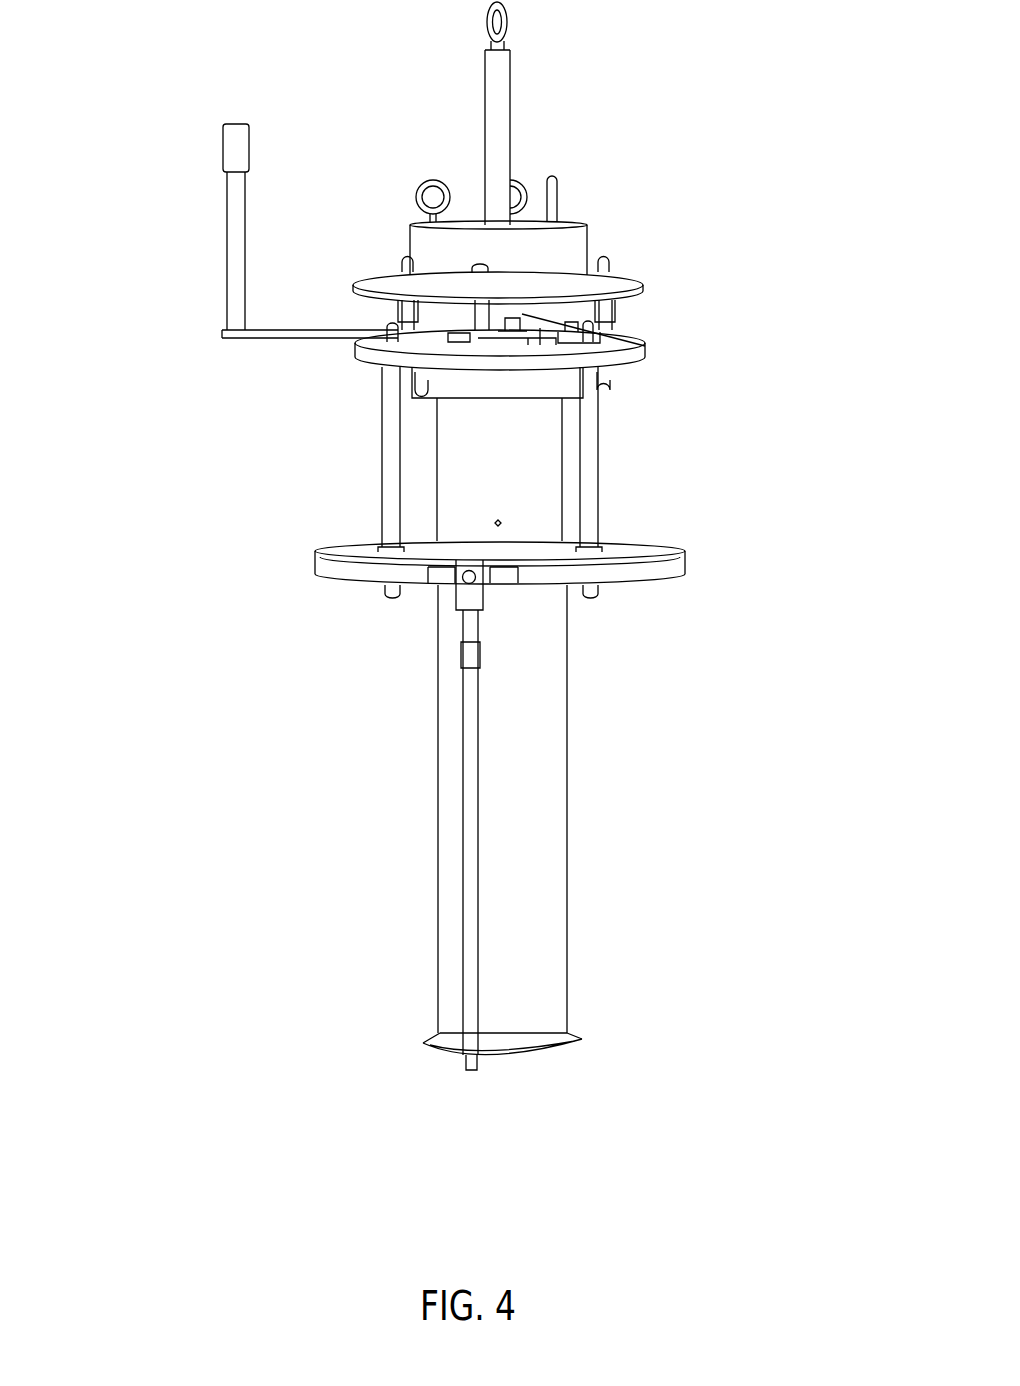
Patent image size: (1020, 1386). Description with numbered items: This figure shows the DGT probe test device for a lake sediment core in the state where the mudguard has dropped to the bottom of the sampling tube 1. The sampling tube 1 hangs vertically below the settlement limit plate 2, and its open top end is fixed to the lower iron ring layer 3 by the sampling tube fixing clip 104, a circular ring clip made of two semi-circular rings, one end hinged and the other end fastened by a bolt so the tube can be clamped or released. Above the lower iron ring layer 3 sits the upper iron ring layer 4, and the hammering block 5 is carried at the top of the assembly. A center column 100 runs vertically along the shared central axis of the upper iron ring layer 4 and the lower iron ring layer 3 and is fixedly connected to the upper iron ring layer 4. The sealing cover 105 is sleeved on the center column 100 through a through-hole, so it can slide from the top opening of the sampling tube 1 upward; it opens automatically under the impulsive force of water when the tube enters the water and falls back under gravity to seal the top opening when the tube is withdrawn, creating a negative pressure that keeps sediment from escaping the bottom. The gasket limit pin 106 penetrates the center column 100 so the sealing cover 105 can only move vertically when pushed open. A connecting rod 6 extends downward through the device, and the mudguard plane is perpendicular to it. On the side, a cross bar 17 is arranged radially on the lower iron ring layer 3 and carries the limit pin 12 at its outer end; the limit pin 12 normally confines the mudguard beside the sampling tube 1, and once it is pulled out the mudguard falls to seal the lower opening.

The sampling tube 1 is at (543, 745).
The settlement limit plate 2 is at (683, 560).
The lower iron ring layer 3 is at (377, 358).
The upper iron ring layer 4 is at (608, 295).
The hammering block 5 is at (565, 262).
The connecting rod 6 is at (473, 877).
The limit pin 12 is at (233, 241).
The cross bar 17 is at (228, 334).
The center column 100 is at (506, 133).
The sampling tube fixing clip 104 is at (502, 380).
The sealing cover 105 is at (540, 349).
The gasket limit pin 106 is at (527, 319).